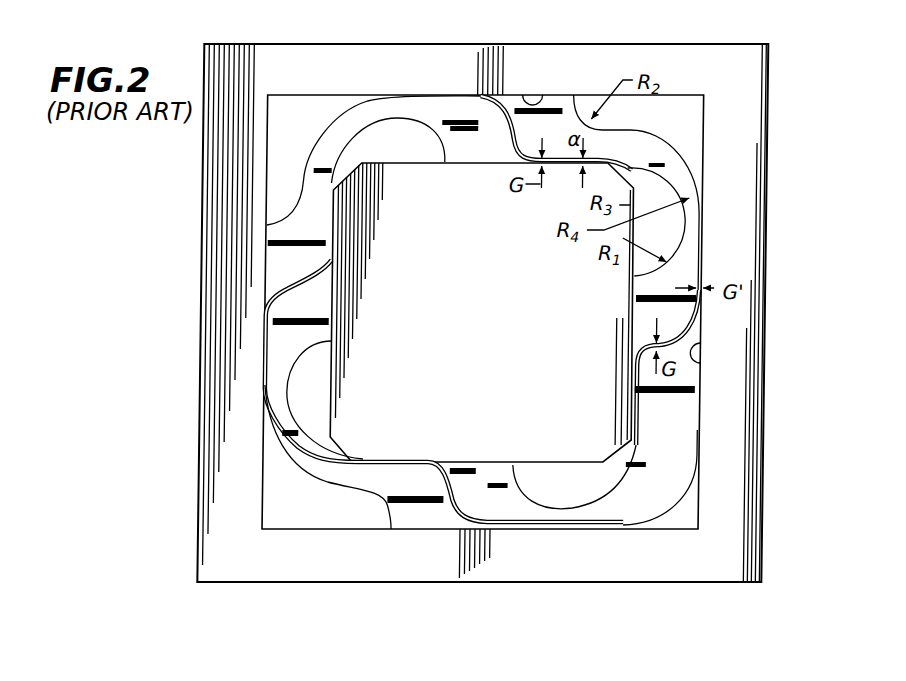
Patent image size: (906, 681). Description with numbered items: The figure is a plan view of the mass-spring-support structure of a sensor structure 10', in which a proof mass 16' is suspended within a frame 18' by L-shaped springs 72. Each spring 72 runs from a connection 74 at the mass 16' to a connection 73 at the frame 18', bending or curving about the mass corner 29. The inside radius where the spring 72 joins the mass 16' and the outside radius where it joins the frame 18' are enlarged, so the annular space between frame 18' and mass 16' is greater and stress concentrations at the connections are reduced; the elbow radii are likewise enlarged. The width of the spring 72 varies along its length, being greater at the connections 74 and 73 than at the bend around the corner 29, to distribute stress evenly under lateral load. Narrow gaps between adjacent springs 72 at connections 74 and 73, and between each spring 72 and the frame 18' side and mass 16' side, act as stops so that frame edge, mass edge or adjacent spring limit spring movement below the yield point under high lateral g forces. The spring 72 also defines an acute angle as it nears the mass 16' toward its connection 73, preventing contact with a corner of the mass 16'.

The sensor structure 10' is at (483, 335).
The proof mass 16' is at (492, 391).
The frame 18' is at (786, 313).
The mass corner 29 is at (624, 169).
The spring 72 is at (329, 130).
The connection at frame 73 is at (547, 96).
The connection at mass 74 is at (606, 280).